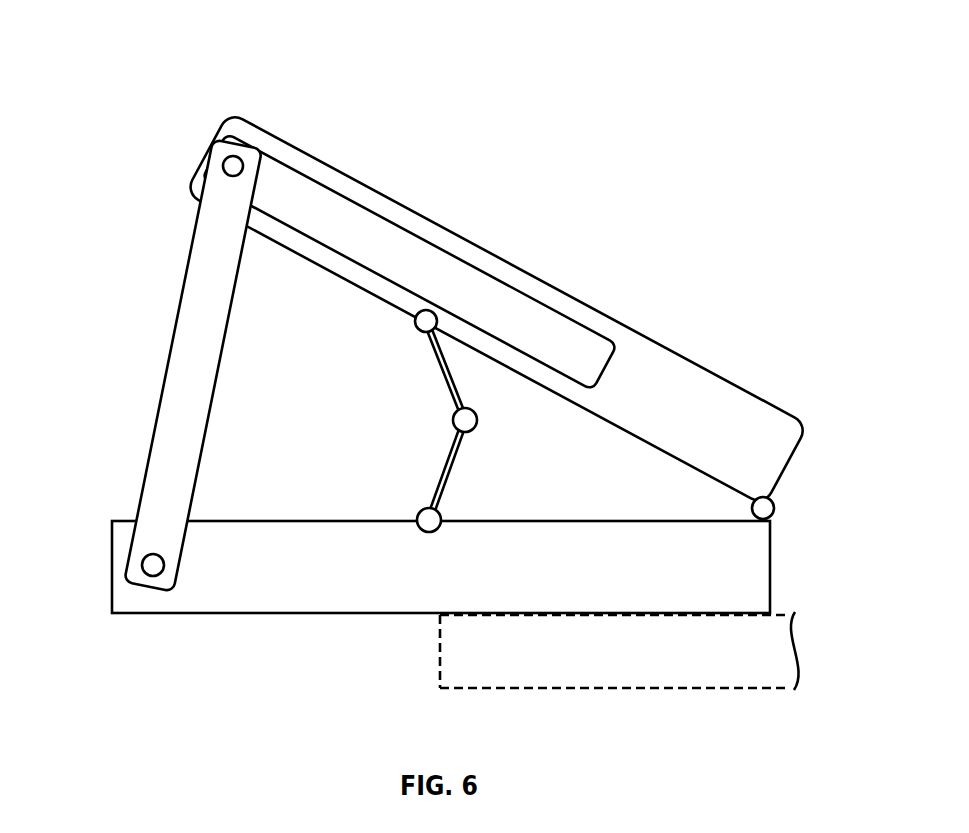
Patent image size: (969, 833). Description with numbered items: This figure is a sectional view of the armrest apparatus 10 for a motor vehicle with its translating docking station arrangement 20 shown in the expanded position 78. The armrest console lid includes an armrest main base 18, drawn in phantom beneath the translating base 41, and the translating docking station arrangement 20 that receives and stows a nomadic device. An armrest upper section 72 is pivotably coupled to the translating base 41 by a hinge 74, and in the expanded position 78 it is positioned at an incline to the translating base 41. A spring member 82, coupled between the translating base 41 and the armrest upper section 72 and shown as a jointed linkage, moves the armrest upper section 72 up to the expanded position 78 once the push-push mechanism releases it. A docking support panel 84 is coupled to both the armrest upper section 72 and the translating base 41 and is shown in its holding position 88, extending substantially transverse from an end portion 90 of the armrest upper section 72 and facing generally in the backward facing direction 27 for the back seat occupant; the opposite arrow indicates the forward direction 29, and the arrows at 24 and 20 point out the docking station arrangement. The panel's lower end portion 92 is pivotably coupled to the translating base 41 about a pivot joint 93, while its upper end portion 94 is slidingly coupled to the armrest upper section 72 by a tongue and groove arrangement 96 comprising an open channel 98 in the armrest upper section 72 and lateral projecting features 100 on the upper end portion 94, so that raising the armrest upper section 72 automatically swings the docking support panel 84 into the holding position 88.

The armrest apparatus 10 is at (711, 163).
The armrest main base 18 is at (543, 673).
The translating docking station arrangement 20 is at (755, 299).
The storage compartment 24 is at (755, 242).
The backward facing direction 27 is at (112, 85).
The forward direction 29 is at (760, 85).
The translating base 41 is at (149, 602).
The armrest upper section 72 is at (476, 243).
The hinge 74 is at (775, 511).
The expanded position 78 is at (359, 158).
The spring member 82 is at (455, 467).
The docking support panel 84 is at (181, 293).
The holding position 88 is at (152, 440).
The end portion 90 is at (257, 124).
The lower end portion 92 is at (130, 547).
The pivot joint 93 is at (127, 568).
The upper end portion 94 is at (209, 160).
The tongue and groove arrangement 96 is at (273, 174).
The open channel 98 is at (398, 233).
The lateral projecting features 100 is at (232, 178).